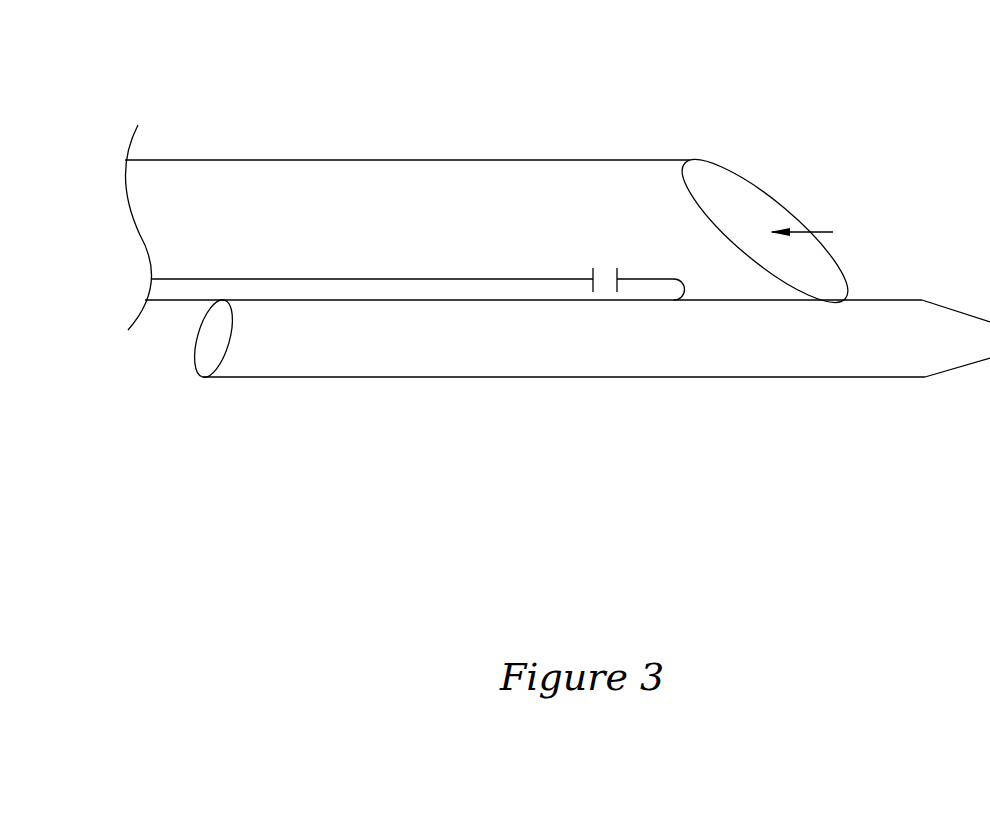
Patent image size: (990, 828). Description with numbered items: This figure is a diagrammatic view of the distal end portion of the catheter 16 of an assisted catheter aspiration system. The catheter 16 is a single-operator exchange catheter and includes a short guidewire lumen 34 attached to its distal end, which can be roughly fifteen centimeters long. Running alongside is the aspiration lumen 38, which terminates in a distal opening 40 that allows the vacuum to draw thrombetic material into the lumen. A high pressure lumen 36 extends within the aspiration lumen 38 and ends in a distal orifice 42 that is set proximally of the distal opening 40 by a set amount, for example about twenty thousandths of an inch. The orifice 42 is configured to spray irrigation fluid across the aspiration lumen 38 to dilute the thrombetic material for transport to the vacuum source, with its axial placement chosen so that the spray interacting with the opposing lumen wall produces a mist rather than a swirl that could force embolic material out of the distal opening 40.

The catheter 16 is at (551, 112).
The guidewire lumen 34 is at (603, 367).
The high pressure lumen 36 is at (185, 287).
The aspiration lumen 38 is at (373, 173).
The distal opening 40 is at (740, 203).
The distal orifice 42 is at (606, 278).